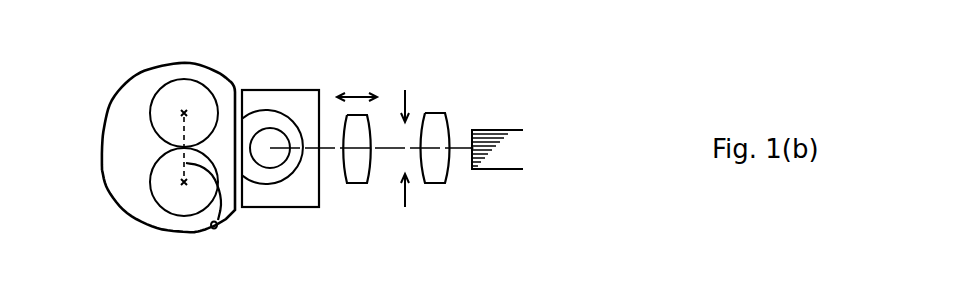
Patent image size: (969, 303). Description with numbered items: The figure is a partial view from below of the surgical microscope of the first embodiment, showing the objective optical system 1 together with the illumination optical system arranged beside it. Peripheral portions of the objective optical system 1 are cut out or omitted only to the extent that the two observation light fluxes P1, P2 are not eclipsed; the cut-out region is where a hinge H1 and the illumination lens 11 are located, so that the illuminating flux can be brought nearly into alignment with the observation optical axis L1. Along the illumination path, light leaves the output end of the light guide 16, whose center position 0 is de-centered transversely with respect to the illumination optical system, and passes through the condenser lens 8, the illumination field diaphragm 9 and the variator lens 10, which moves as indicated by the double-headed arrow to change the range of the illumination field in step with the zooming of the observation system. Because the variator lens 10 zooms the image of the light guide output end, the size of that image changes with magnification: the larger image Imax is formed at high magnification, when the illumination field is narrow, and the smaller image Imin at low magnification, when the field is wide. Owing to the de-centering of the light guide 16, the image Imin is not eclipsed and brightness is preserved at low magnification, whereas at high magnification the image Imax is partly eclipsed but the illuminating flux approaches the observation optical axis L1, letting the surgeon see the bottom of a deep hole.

The objective optical system 1 is at (103, 170).
The observation optical axis L1 is at (183, 110).
The light flux of the observation optical system P1 is at (173, 82).
The light flux of the observation optical system P2 is at (150, 193).
The hinge H1 is at (220, 223).
The illumination lens 11 is at (318, 207).
The light guide output end image at high magnification Imax is at (280, 110).
The light guide output end image at low magnification Imin is at (283, 130).
The variator lens 10 is at (370, 185).
The illumination field diaphragm 9 is at (413, 200).
The condenser lens 8 is at (452, 178).
The center position of the output end of the light guide 0 is at (472, 148).
The light guide 16 is at (523, 177).